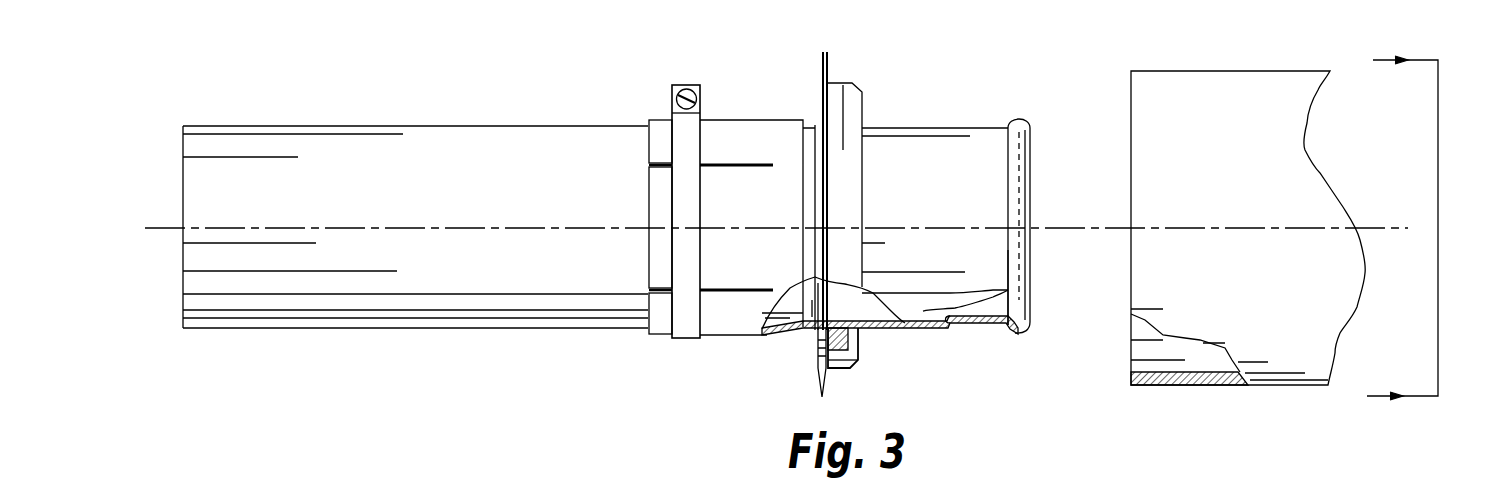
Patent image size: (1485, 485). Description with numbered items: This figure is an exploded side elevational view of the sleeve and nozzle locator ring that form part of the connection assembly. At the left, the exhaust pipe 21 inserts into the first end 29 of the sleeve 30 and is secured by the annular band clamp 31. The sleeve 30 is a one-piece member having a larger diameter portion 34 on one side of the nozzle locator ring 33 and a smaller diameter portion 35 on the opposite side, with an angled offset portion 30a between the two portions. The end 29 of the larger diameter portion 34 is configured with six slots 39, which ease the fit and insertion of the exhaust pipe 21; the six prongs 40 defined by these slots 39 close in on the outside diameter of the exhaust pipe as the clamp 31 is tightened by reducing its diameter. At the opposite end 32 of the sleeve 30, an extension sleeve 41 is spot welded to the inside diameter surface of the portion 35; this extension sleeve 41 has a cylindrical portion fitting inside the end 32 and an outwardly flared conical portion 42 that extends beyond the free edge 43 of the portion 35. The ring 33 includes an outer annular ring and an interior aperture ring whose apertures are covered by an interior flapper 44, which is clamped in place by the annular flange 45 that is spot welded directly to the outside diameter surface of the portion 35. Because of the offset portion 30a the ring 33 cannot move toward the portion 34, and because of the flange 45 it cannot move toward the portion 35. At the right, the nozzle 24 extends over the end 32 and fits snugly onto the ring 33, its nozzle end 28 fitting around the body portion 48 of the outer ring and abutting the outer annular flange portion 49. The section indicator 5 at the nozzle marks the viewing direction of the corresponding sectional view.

The exhaust pipe 21 is at (349, 297).
The nozzle 24 is at (1297, 350).
The nozzle end 28 is at (1145, 136).
The first end 29 is at (653, 200).
The sleeve 30 is at (808, 140).
The angled offset portion 30a is at (808, 140).
The annular band clamp 31 is at (687, 130).
The opposite end 32 is at (1003, 340).
The nozzle locator ring 33 is at (877, 330).
The larger diameter portion 34 is at (722, 308).
The smaller diameter portion 35 is at (942, 177).
The slots 39 is at (662, 160).
The prongs 40 is at (660, 268).
The extension sleeve 41 is at (948, 328).
The outwardly flared conical portion 42 is at (1013, 125).
The free edge 43 is at (1008, 252).
The interior flapper 44 is at (817, 337).
The annular flange 45 is at (853, 337).
The body portion 48 is at (835, 128).
The outer annular flange portion 49 is at (826, 52).
The section line 5- 5 is at (1420, 232).